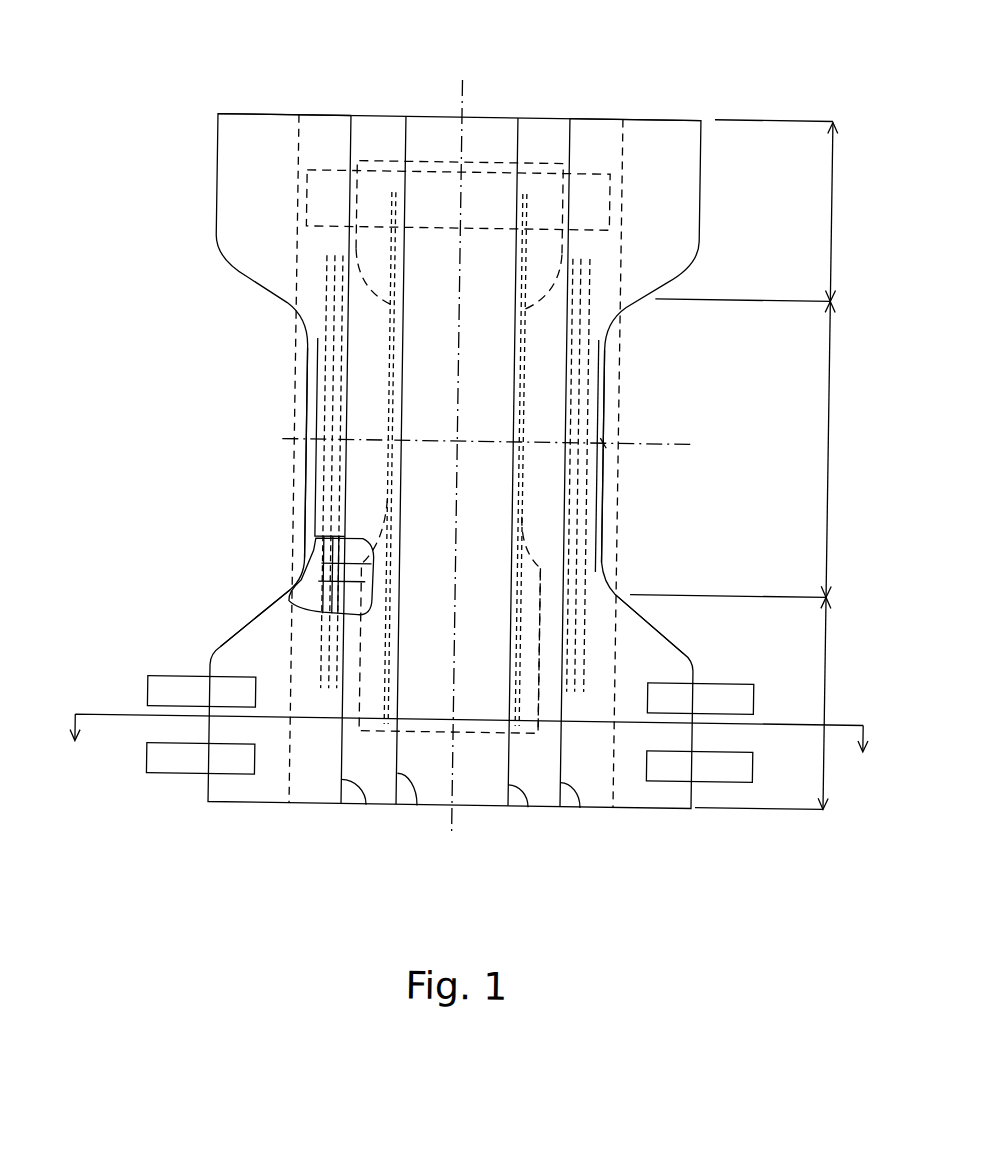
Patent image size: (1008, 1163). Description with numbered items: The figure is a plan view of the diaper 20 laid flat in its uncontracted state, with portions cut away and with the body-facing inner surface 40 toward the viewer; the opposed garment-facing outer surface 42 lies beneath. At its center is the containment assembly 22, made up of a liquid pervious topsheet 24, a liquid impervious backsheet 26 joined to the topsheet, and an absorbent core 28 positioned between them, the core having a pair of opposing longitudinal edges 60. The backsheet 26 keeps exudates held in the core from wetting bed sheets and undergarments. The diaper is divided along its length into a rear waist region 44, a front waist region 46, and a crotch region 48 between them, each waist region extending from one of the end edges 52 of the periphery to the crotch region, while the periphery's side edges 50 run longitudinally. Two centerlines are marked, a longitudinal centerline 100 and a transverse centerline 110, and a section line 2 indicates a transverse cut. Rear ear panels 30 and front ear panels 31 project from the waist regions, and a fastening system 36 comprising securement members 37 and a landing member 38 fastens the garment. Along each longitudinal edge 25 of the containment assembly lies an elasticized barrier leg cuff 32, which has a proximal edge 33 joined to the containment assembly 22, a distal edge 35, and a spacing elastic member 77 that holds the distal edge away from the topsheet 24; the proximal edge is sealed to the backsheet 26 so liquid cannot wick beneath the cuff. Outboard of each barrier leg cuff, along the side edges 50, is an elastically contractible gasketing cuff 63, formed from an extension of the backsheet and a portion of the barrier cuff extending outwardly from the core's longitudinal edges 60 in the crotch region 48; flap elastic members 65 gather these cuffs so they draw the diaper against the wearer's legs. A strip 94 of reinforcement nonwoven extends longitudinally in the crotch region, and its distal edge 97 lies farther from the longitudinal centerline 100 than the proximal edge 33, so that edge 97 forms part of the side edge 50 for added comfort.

The diaper 20 is at (176, 102).
The containment assembly 22 is at (414, 297).
The liquid pervious topsheet 24 is at (491, 354).
The longitudinal edges of the containment assembly 25 is at (297, 817).
The liquid impervious backsheet 26 is at (305, 598).
The absorbent core 28 is at (340, 565).
The rear ear panels 30 is at (254, 660).
The front ear panels 31 is at (262, 141).
The barrier leg cuff 32 is at (555, 581).
The proximal edge 33 is at (371, 806).
The distal edge 35 is at (422, 806).
The fastening system 36 is at (135, 706).
The securement members 37 is at (174, 767).
The landing member 38 is at (606, 200).
The inner surface 40 is at (490, 406).
The outer surface 42 is at (306, 412).
The rear waist region 44 is at (828, 684).
The front waist region 46 is at (828, 198).
The crotch region 48 is at (828, 457).
The side edges 50 is at (604, 436).
The end edges 52 is at (416, 116).
The longitudinal edges of the absorbent core 60 is at (322, 593).
The gasketing cuffs 63 is at (587, 515).
The flap elastic members 65 is at (322, 583).
The spacing elastic member 77 is at (382, 351).
The strip of nonwoven material 94 is at (306, 381).
The distal edge of the strip 97 is at (603, 470).
The longitudinal centerline 100 is at (464, 90).
The transverse centerline 110 is at (695, 441).
The section line 2- 2 is at (467, 753).